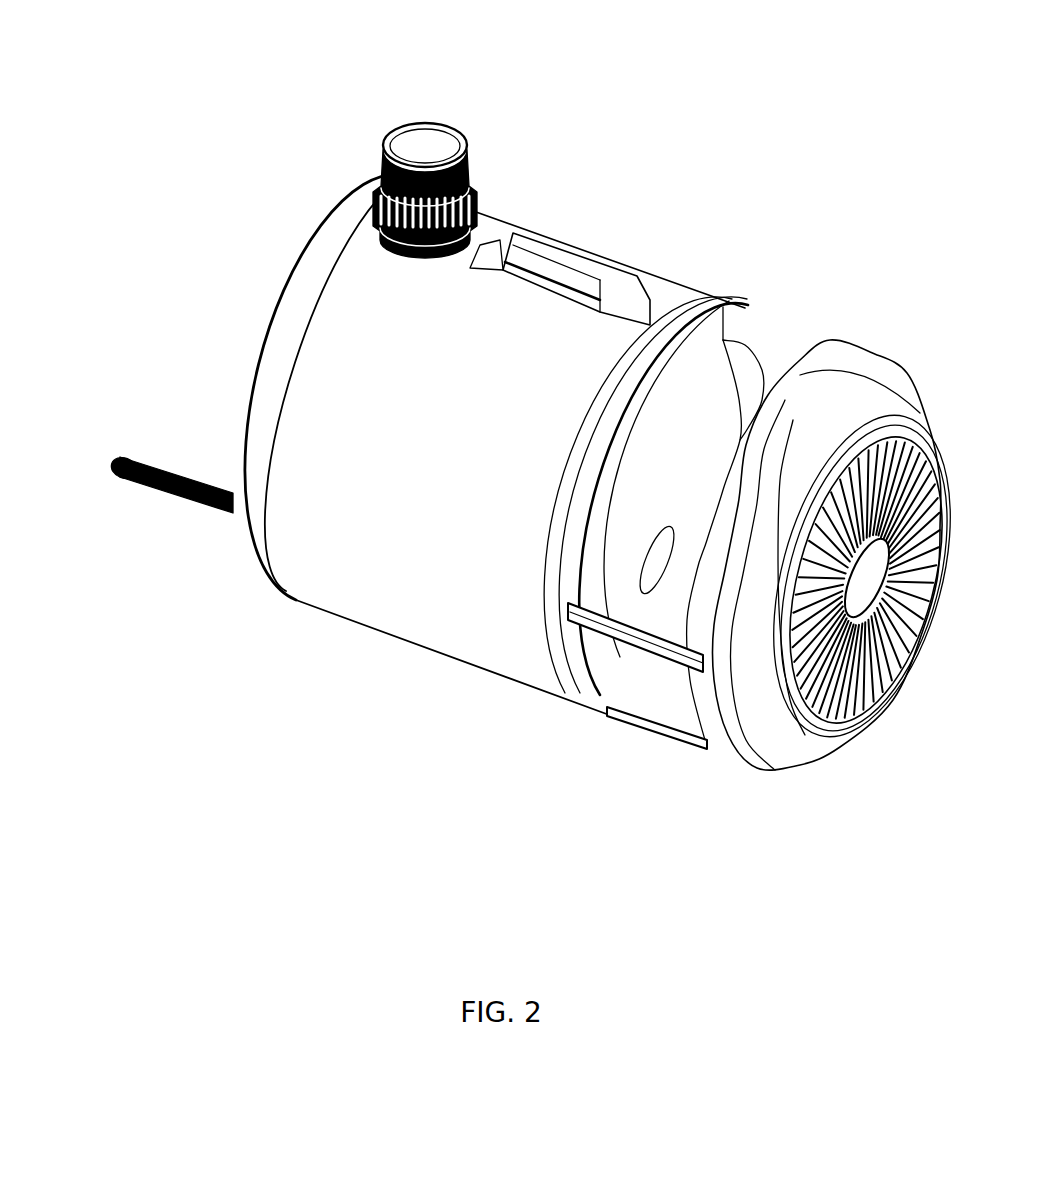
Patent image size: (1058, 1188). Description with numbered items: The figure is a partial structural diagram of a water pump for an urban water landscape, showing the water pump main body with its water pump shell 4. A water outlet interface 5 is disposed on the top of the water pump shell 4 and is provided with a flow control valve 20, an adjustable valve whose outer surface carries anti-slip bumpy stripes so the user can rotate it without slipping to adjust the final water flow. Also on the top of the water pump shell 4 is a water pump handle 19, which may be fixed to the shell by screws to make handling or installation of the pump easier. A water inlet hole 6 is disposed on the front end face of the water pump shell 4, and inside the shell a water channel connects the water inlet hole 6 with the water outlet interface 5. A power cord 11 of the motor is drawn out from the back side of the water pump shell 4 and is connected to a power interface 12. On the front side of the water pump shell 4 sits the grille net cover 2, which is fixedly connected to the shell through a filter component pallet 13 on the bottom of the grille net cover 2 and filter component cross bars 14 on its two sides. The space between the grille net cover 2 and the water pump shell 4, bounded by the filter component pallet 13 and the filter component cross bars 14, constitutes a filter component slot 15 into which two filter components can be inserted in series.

The grille net cover 2 is at (852, 397).
The water pump shell 4 is at (373, 593).
The water outlet interface 5 is at (420, 147).
The water inlet hole 6 is at (650, 590).
The power cord 11 is at (207, 507).
The power interface 12 is at (133, 487).
The filter component pallet 13 is at (675, 737).
The filter component cross bars 14 is at (567, 655).
The filter component slot 15 is at (792, 340).
The water pump handle 19 is at (593, 272).
The flow control valve 20 is at (373, 177).